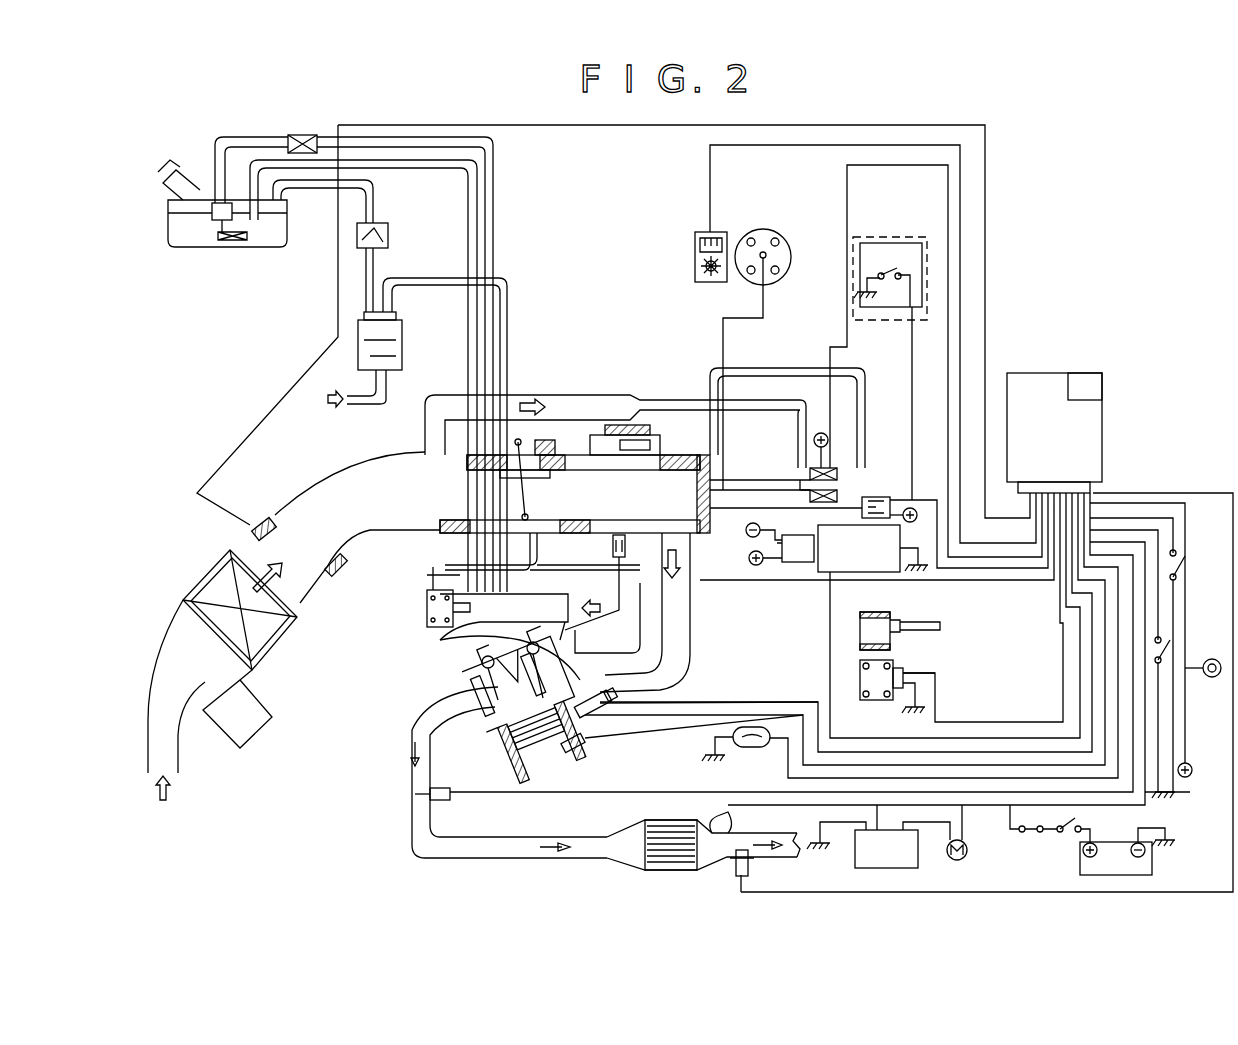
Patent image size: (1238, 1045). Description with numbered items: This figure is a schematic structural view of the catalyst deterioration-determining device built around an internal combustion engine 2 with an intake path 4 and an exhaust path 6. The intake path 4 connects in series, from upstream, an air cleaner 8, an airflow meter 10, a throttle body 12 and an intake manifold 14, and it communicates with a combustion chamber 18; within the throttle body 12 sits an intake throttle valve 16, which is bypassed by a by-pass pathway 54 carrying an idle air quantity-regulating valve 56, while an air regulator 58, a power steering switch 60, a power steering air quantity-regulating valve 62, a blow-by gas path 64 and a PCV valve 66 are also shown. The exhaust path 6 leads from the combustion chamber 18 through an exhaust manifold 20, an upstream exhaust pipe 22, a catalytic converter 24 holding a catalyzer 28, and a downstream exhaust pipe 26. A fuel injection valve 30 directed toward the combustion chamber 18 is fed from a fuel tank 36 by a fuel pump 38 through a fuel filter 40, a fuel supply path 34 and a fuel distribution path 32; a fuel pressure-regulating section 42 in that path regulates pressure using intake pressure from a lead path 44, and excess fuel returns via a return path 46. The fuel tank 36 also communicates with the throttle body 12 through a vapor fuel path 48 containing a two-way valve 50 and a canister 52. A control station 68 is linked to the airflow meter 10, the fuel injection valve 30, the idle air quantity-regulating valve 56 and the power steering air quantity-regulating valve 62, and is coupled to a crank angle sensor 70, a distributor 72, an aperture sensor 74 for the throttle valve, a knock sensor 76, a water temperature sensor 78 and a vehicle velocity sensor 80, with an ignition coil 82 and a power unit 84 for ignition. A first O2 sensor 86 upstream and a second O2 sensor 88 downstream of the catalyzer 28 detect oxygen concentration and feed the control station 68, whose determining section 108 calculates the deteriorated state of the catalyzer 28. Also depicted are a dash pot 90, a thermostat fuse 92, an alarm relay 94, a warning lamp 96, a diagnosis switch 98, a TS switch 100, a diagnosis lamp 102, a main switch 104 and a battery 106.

The internal combustion engine 2 is at (548, 708).
The intake path 4 is at (678, 468).
The exhaust path 6 is at (588, 799).
The air cleaner 8 is at (218, 578).
The airflow meter 10 is at (251, 512).
The throttle body 12 is at (514, 428).
The intake manifold 14 is at (700, 596).
The intake throttle valve 16 is at (528, 492).
The combustion chamber 18 is at (495, 750).
The exhaust manifold 20 is at (396, 758).
The upstream exhaust pipe 22 is at (487, 858).
The catalytic converter 24 is at (664, 865).
The downstream exhaust pipe 26 is at (790, 858).
The catalyzer 28 is at (658, 866).
The fuel injection valve 30 is at (472, 646).
The fuel distribution path 32 is at (467, 630).
The fuel supply path 34 is at (495, 196).
The fuel tank 36 is at (210, 247).
The fuel pump 38 is at (218, 203).
The fuel filter 40 is at (288, 140).
The fuel pressure-regulating section 42 is at (427, 607).
The lead path 44 is at (427, 577).
The return path 46 is at (412, 162).
The vapor fuel path 48 is at (307, 188).
The two-way valve 50 is at (388, 236).
The canister 52 is at (402, 340).
The by-pass pathway 54 is at (610, 398).
The idle air quantity-regulating valve 56 is at (810, 468).
The air regulator 58 is at (650, 425).
The power steering switch 60 is at (873, 253).
The power steering air quantity-regulating valve 62 is at (877, 497).
The blow-by gas path 64 is at (618, 594).
The PCV valve 66 is at (613, 546).
The control station 68 is at (1045, 382).
The crank angle sensor 70 is at (695, 260).
The distributor 72 is at (770, 231).
The aperture sensor 74 is at (862, 695).
The knock sensor 76 is at (612, 702).
The water temperature sensor 78 is at (585, 740).
The vehicle velocity sensor 80 is at (752, 747).
The ignition coil 82 is at (793, 562).
The power unit for ignition 84 is at (902, 540).
The first O2 sensor 86 is at (450, 797).
The second O2 sensor 88 is at (735, 858).
The dash pot 90 is at (940, 626).
The thermostat fuse 92 is at (705, 822).
The alarm relay 94 is at (918, 862).
The warning lamp 96 is at (964, 860).
The diagnosis switch 98 is at (1183, 566).
The TS switch 100 is at (1172, 650).
The diagnosis lamp 102 is at (1212, 678).
The main switch 104 is at (1062, 832).
The battery 106 is at (1152, 868).
The determining section 108 is at (1085, 382).